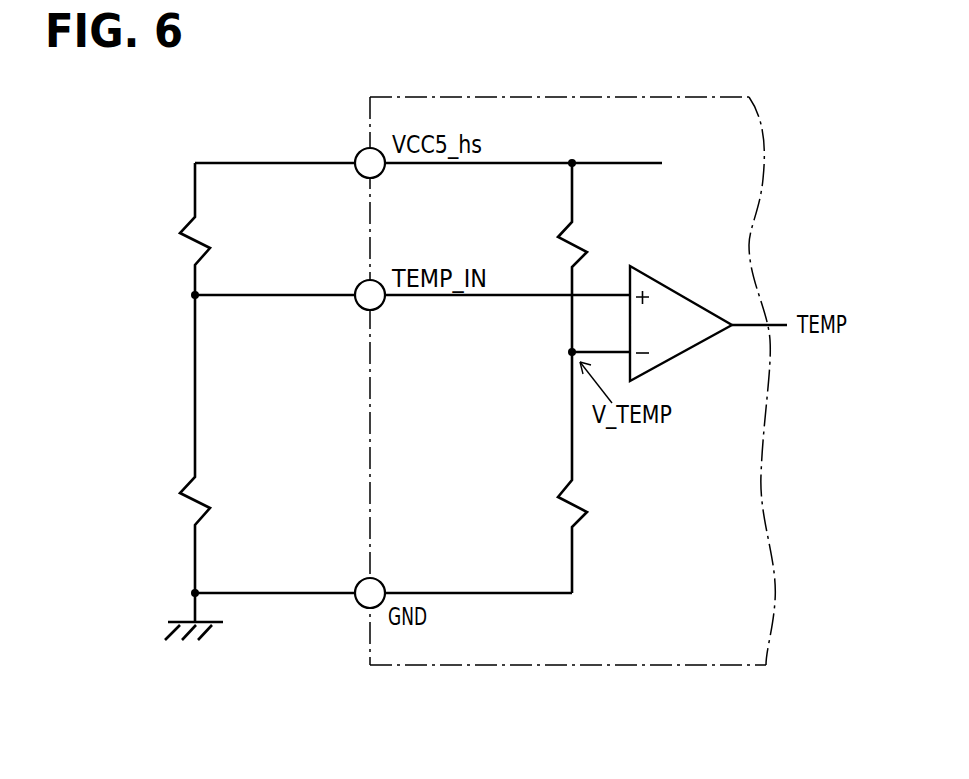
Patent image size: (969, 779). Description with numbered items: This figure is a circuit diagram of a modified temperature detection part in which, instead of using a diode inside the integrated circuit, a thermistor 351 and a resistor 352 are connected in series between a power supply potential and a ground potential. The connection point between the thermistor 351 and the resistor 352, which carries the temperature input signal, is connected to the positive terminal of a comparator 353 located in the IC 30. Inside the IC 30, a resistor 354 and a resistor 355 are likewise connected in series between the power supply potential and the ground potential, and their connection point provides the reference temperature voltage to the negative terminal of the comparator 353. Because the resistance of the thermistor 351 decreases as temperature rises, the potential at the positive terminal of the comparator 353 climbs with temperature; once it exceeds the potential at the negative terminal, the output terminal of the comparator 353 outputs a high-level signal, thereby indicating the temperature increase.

The IC 30 is at (510, 666).
The thermistor 351 is at (200, 238).
The resistor 352 is at (205, 498).
The comparator 353 is at (677, 292).
The resistor 354 is at (583, 241).
The resistor 355 is at (588, 501).